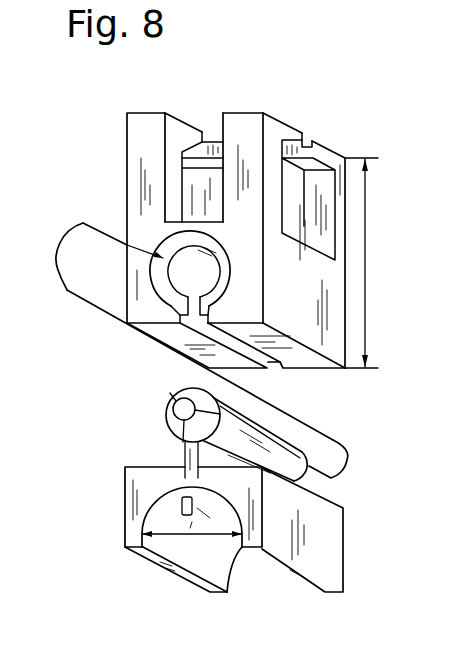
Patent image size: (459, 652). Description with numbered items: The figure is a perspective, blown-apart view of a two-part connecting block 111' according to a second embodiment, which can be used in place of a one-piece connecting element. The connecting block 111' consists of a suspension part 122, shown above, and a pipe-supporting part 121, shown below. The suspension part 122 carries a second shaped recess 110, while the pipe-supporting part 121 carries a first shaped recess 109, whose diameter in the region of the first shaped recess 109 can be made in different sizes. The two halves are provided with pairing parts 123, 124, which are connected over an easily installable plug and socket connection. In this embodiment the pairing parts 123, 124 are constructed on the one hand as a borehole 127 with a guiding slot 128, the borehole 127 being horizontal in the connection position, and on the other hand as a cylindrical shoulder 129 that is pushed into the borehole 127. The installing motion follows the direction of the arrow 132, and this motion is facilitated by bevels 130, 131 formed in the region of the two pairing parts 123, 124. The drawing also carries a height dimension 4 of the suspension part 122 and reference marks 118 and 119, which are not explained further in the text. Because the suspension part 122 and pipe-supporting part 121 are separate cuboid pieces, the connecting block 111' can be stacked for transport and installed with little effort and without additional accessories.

The connecting block 111' is at (218, 229).
The pillars 118 is at (152, 125).
The second shaped recess 110 is at (197, 193).
The groove 119 is at (305, 142).
The suspension part 122 is at (133, 159).
The arrow 132 is at (58, 268).
The pairing part 124 is at (182, 272).
The bevel 130 is at (172, 302).
The borehole 127 is at (225, 278).
The height dimension 4 is at (367, 265).
The guiding slot 128 is at (283, 368).
The bevel 131 is at (163, 400).
The pairing part 123 is at (160, 421).
The pipe-supporting part 121 is at (140, 500).
The cylindrical shoulder 129 is at (279, 468).
The first shaped recess 109 is at (253, 582).